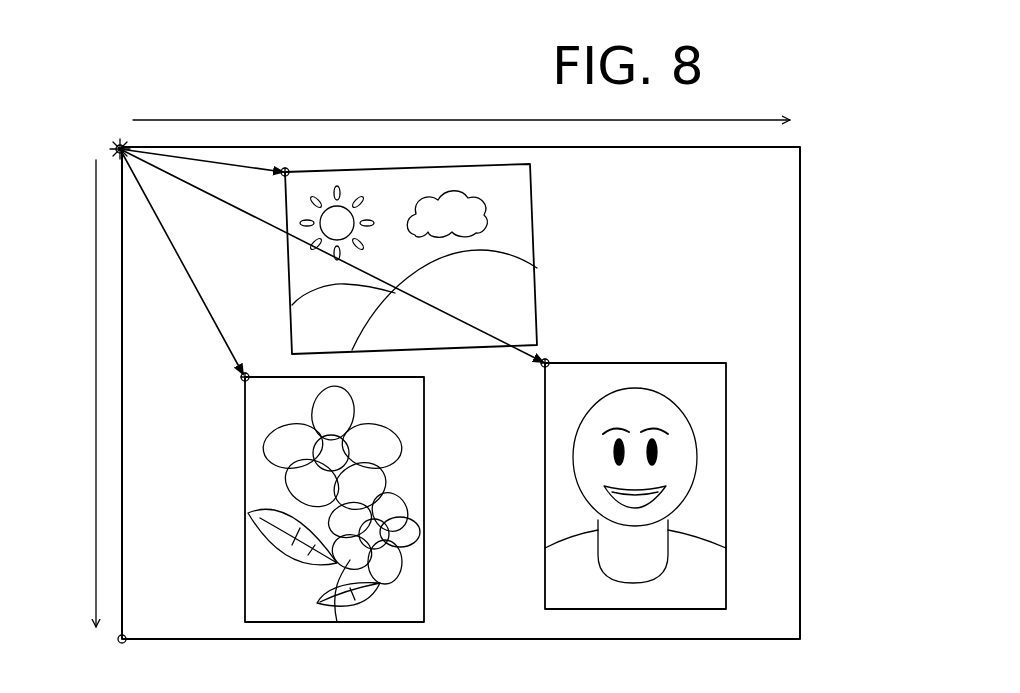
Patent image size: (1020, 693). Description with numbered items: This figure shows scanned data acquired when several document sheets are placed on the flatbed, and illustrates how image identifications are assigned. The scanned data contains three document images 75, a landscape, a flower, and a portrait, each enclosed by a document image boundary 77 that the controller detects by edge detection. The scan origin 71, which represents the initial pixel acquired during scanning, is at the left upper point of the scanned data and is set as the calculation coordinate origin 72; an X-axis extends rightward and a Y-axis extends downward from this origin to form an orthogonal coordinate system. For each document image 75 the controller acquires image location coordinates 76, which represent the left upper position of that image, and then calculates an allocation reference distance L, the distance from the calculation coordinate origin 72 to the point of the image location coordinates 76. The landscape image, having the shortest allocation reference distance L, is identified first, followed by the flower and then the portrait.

The scan origin 71 is at (121, 145).
The calculation coordinate origin 72 is at (117, 150).
The document image 75 is at (470, 173).
The image location coordinates 76 is at (287, 168).
The document image boundary 77 is at (540, 213).
The allocation reference distance L is at (216, 162).